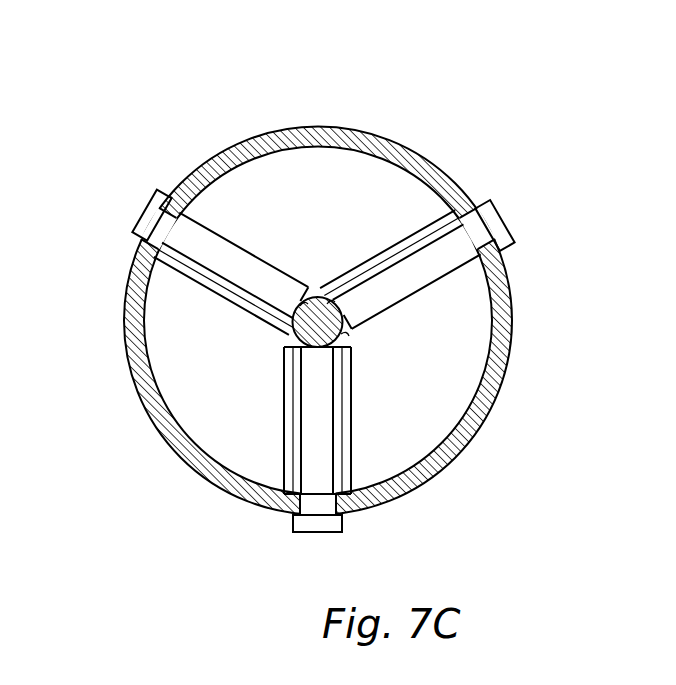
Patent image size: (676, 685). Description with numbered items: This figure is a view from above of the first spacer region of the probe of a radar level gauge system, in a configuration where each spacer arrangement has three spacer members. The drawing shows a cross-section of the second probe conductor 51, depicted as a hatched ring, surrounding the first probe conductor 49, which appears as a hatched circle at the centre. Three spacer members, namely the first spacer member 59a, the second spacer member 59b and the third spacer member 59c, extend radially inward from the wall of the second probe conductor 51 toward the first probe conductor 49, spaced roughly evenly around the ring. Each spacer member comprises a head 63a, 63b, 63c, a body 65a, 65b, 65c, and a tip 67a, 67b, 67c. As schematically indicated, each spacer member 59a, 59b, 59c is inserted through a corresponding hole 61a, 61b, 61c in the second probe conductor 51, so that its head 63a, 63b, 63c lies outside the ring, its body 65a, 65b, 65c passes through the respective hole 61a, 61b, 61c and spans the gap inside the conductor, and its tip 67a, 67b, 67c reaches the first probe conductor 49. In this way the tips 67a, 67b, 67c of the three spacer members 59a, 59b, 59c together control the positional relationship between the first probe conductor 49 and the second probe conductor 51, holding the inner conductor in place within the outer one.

The second probe conductor 51 is at (328, 128).
The first spacer member 59a is at (217, 243).
The second spacer member 59b is at (433, 262).
The third spacer member 59c is at (334, 433).
The hole 61a is at (169, 239).
The hole 61b is at (483, 217).
The hole 61c is at (319, 512).
The head 63a is at (145, 212).
The head 63b is at (508, 217).
The head 63c is at (305, 534).
The body 65a is at (243, 278).
The body 65b is at (395, 260).
The body 65c is at (288, 377).
The tip 67a is at (304, 302).
The tip 67b is at (337, 301).
The tip 67c is at (342, 333).
The first probe conductor 49 is at (308, 324).